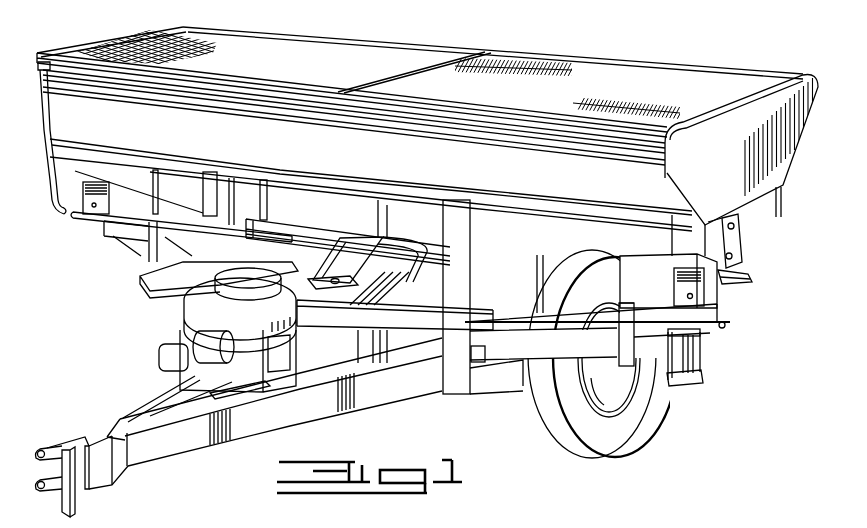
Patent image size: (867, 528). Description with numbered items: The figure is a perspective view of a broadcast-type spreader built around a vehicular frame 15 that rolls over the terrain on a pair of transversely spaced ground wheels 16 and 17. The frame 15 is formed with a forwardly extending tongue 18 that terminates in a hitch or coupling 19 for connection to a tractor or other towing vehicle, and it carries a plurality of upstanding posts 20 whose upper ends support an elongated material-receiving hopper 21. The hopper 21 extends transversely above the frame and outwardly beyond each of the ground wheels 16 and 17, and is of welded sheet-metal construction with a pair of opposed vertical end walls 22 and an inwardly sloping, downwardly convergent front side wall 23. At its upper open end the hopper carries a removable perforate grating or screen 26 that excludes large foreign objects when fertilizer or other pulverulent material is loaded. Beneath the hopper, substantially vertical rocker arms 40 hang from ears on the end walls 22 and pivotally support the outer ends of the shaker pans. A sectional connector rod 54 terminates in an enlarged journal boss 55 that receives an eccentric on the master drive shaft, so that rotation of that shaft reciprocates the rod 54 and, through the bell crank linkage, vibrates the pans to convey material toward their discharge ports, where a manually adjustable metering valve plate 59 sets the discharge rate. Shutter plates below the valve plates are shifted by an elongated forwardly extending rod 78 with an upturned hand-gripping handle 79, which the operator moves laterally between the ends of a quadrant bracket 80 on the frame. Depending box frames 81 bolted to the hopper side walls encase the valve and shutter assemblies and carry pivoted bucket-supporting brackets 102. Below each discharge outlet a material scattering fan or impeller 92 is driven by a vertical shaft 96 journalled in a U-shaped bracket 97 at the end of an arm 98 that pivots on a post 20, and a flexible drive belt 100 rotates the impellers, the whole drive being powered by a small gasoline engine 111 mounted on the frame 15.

The vehicular frame 15 is at (435, 399).
The ground wheel 16 is at (618, 440).
The ground wheel 17 is at (275, 212).
The tongue 18 is at (110, 470).
The hitch or coupling 19 is at (42, 447).
The upstanding posts 20 is at (205, 197).
The material-receiving hopper 21 is at (500, 54).
The end walls 22 is at (123, 34).
The front side wall 23 is at (367, 162).
The perforate grating or screen 26 is at (240, 42).
The rocker arms 40 is at (743, 238).
The connector rod or bar 54 is at (370, 258).
The journal boss 55 is at (351, 285).
The metering valve plate 59 is at (753, 278).
The rod 78 is at (95, 218).
The hand-gripping handle 79 is at (58, 128).
The quadrant bracket 80 is at (220, 268).
The box frames 81 is at (132, 198).
The material scattering fan or impeller 92 is at (732, 323).
The shaft 96 is at (697, 354).
The U-shaped bracket 97 is at (667, 382).
The arm 98 is at (552, 355).
The flexible drive belt 100 is at (621, 333).
The bucket-supporting brackets 102 is at (705, 299).
The gasoline engine 111 is at (183, 300).